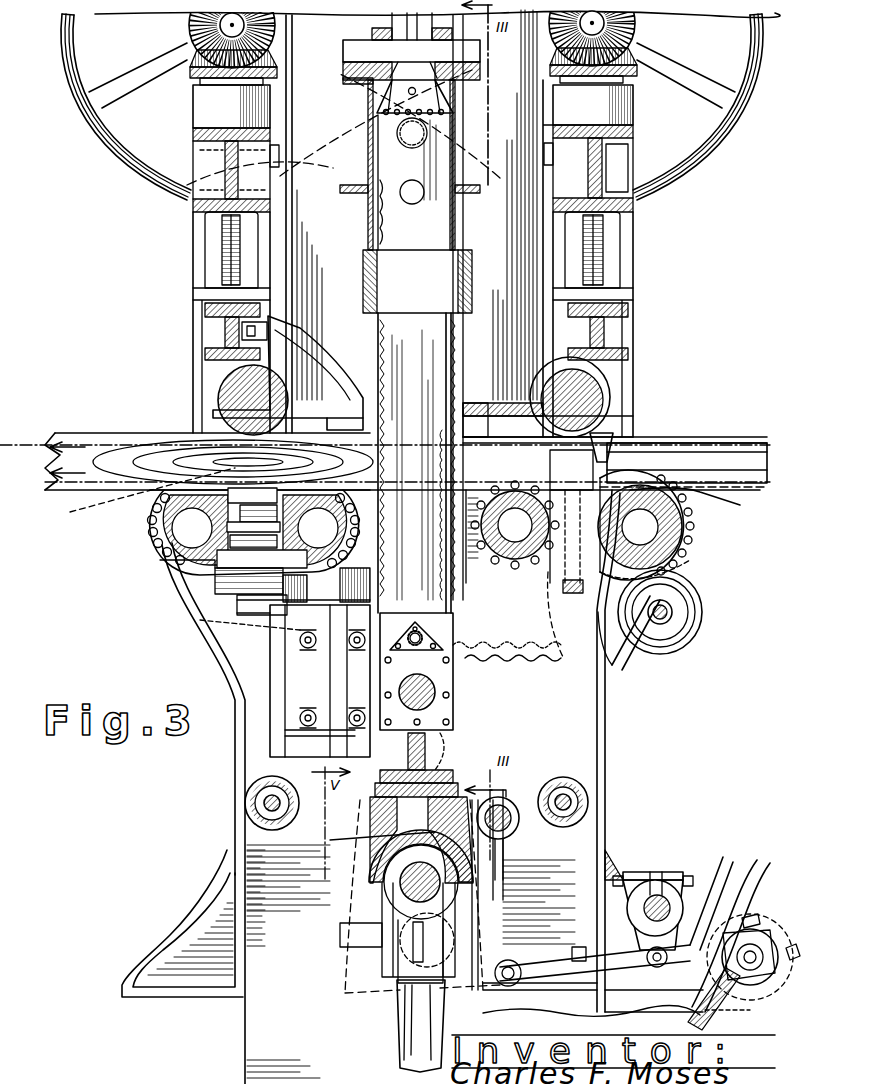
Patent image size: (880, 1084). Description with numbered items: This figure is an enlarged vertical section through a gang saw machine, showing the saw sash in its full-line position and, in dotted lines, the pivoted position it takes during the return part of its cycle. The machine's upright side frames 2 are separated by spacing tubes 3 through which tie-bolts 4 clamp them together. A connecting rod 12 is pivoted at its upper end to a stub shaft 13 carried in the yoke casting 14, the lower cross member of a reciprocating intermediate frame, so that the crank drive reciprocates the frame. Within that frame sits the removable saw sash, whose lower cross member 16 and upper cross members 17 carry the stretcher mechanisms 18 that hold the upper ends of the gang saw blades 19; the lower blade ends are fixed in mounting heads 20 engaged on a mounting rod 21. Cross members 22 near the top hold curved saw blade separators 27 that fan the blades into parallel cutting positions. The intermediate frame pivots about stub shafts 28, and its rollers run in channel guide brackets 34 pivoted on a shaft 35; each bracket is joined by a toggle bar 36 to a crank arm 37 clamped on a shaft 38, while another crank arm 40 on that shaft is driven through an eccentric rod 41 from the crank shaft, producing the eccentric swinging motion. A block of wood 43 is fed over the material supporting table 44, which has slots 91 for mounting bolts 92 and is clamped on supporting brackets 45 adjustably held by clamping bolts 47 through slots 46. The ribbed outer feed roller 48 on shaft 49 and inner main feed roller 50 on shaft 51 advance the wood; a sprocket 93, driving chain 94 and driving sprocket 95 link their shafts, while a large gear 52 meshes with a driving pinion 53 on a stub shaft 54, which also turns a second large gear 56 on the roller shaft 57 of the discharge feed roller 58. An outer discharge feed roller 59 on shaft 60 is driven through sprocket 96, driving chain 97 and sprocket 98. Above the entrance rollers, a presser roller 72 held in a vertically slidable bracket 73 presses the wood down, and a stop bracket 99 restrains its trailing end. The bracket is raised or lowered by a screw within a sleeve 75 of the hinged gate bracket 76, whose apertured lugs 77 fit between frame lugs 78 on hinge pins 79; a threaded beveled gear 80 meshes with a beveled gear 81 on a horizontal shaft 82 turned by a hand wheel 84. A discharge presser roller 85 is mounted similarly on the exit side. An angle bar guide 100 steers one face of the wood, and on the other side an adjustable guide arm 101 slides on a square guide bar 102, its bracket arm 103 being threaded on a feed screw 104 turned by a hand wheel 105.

The side frames 2 is at (586, 712).
The spacing tubes 3 is at (260, 822).
The tie-bolts 4 is at (262, 803).
The connecting rod 12 is at (415, 1050).
The stub shaft 13 is at (412, 882).
The yoke casting 14 is at (364, 839).
The cross member 16 is at (438, 775).
The upper cross members 17 is at (445, 180).
The saw blade stretcher mechanisms 18 is at (397, 97).
The gang saw blades 19 is at (400, 358).
The mounting heads 20 is at (455, 678).
The mounting rod 21 is at (438, 696).
The cross members 22 is at (363, 270).
The saw blade separators 27 is at (385, 292).
The stub shafts 28 is at (345, 205).
The channel guide brackets 34 is at (406, 910).
The shaft 35 is at (505, 822).
The toggle bar 36 is at (560, 972).
The crank arm 37 is at (730, 929).
The shaft 38 is at (658, 900).
The crank arm 40 is at (758, 930).
The eccentric rod 41 is at (745, 1000).
The block of wood 43 is at (112, 425).
The material supporting table 44 is at (406, 461).
The supporting brackets 45 is at (292, 662).
The slots 46 is at (352, 735).
The clamping bolts 47 is at (308, 712).
The outer feed roller 48 is at (167, 522).
The shaft 49 is at (163, 548).
The inner main feed roller 50 is at (200, 580).
The feed roller supporting shaft 51 is at (235, 598).
The large gear 52 is at (200, 625).
The driving pinion 53 is at (440, 620).
The stub shaft 54 is at (455, 632).
The second large gear 56 is at (612, 455).
The roller shaft 57 is at (635, 478).
The discharge feed roller 58 is at (512, 535).
The outer discharge feed roller 59 is at (703, 506).
The shaft 60 is at (684, 522).
The presser roller 72 is at (225, 397).
The vertically slidable bracket 73 is at (223, 330).
The sleeve 75 is at (207, 104).
The gate bracket 76 is at (200, 232).
The apertured lugs 77 is at (225, 160).
The apertured lugs 78 is at (270, 137).
The hinge pins 79 is at (222, 255).
The beveled gear 80 is at (195, 52).
The beveled gear 81 is at (190, 26).
The horizontal shaft 82 is at (245, 26).
The hand wheel 84 is at (122, 160).
The discharge presser roller 85 is at (603, 390).
The slots 91 is at (295, 623).
The mounting bolts 92 is at (255, 597).
The sprocket 93 is at (215, 420).
The driving chain 94 is at (175, 560).
The driving sprocket 95 is at (340, 465).
The sprocket 96 is at (690, 560).
The driving chain 97 is at (690, 540).
The sprocket 98 is at (523, 622).
The stop bracket 99 is at (236, 374).
The angle bar guide 100 is at (132, 495).
The adjustable guide arm 101 is at (612, 440).
The square guide bar 102 is at (672, 595).
The bracket arm 103 is at (640, 648).
The feed screw 104 is at (688, 612).
The hand wheel 105 is at (700, 630).